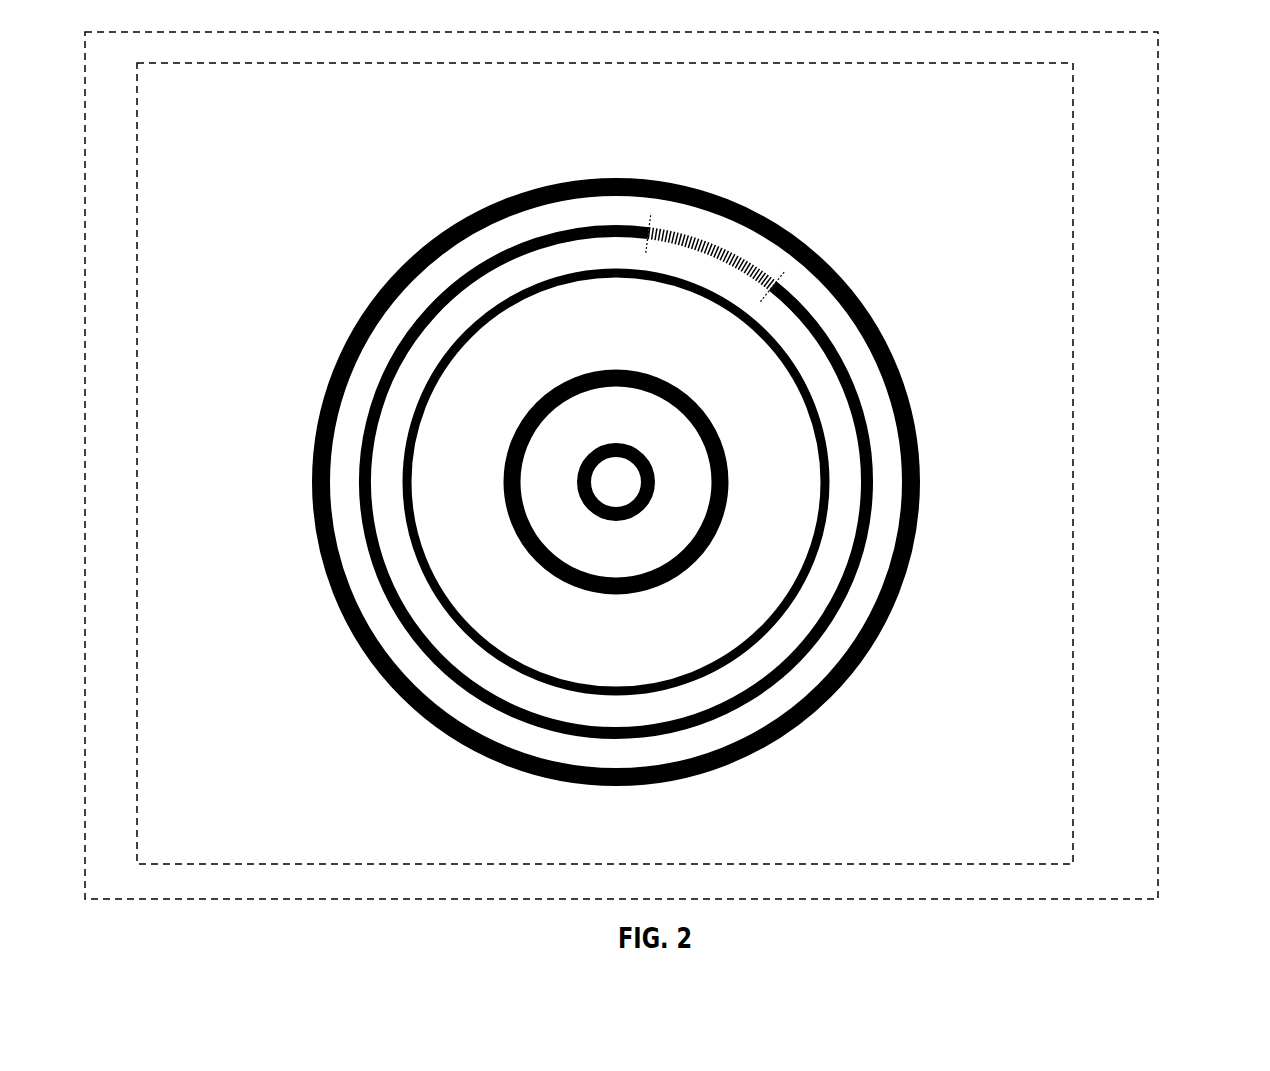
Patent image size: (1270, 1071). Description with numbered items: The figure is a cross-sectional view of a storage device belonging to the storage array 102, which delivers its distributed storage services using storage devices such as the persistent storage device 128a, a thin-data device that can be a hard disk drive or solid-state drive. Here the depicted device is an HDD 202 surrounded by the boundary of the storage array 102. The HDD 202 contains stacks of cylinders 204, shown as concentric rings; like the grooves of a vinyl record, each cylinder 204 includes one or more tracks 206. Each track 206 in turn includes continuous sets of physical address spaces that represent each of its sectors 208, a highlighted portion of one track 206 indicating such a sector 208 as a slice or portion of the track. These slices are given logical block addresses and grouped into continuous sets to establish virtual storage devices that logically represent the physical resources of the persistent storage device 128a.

The storage array 102 is at (1158, 718).
The HDD 202 is at (480, 128).
The cylinder 204 is at (407, 720).
The track 206 is at (426, 294).
The sector 208 is at (750, 239).
The persistent storage device 128a is at (628, 828).